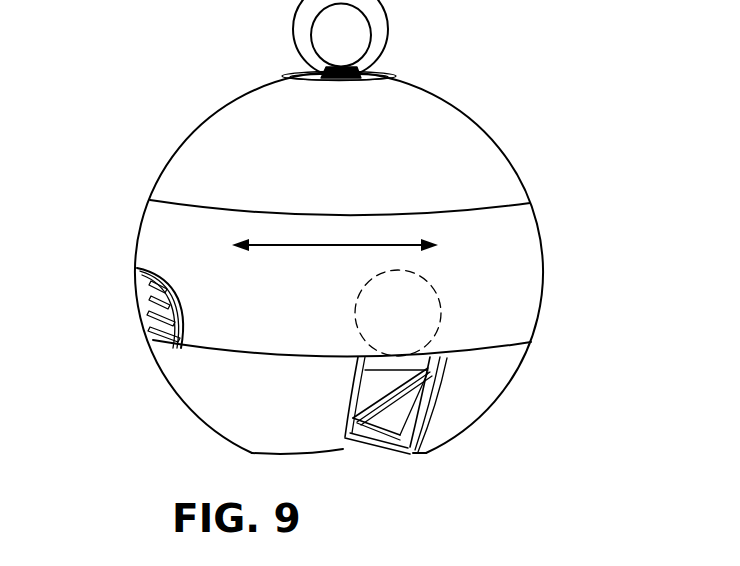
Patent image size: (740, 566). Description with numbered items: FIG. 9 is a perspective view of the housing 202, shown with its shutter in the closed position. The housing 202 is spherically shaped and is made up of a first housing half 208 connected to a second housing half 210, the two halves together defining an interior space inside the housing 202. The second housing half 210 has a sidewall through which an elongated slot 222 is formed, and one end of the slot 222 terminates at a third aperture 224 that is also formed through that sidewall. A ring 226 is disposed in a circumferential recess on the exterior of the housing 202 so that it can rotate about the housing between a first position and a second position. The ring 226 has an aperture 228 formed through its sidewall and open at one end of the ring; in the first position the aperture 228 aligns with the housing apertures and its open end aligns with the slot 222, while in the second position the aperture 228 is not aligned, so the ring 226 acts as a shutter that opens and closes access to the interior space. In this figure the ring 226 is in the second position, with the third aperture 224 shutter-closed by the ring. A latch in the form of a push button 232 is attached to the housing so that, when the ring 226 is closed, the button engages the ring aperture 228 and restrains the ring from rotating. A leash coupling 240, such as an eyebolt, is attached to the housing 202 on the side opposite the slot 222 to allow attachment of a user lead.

The housing 202 is at (214, 106).
The leash coupling 240 is at (377, 30).
The first housing half 208 is at (473, 132).
The ring 226 is at (515, 292).
The second housing half 210 is at (205, 402).
The third aperture 224 is at (442, 325).
The elongated slot 222 is at (380, 452).
The ring aperture 228 is at (138, 270).
The push button 232 is at (145, 318).